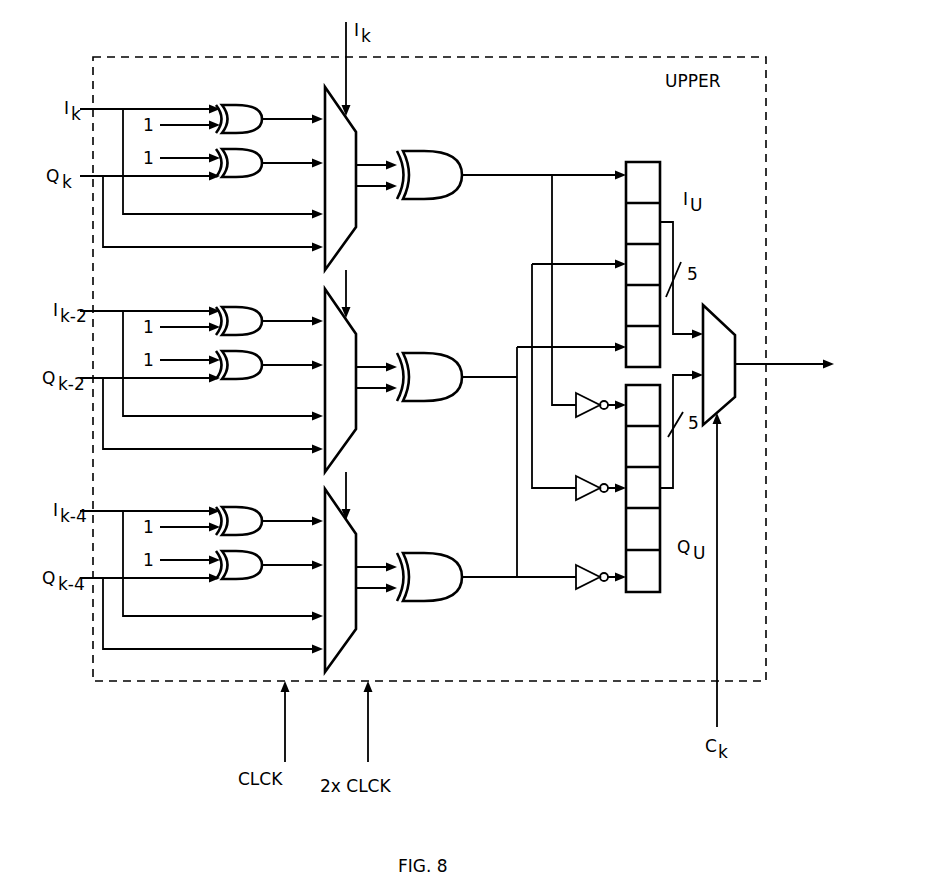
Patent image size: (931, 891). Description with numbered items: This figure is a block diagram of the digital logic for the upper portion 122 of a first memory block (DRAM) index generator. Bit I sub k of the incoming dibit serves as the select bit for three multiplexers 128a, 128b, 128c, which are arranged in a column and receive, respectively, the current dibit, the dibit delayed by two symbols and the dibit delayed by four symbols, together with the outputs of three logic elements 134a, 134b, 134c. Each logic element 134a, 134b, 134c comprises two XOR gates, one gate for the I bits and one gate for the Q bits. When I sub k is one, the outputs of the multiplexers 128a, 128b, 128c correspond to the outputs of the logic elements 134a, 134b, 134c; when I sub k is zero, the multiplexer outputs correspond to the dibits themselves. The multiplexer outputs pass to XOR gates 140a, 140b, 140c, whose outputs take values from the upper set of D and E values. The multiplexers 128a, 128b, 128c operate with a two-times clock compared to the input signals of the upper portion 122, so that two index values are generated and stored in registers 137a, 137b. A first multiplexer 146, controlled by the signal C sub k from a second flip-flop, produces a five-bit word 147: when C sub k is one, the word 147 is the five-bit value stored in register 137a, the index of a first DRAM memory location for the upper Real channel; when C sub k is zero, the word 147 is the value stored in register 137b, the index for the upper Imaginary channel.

The upper portion of the look-up table 122 is at (134, 742).
The multiplexer 128a is at (353, 123).
The multiplexer 128b is at (353, 325).
The multiplexer 128c is at (353, 525).
The logic element 134a is at (254, 145).
The logic element 134b is at (254, 347).
The logic element 134c is at (254, 547).
The XOR gate 140a is at (506, 171).
The XOR gate 140b is at (485, 371).
The XOR gate 140c is at (485, 571).
The register 137a is at (719, 251).
The register 137b is at (676, 582).
The first multiplexer 146 is at (714, 315).
The five-bit word 147 is at (795, 359).